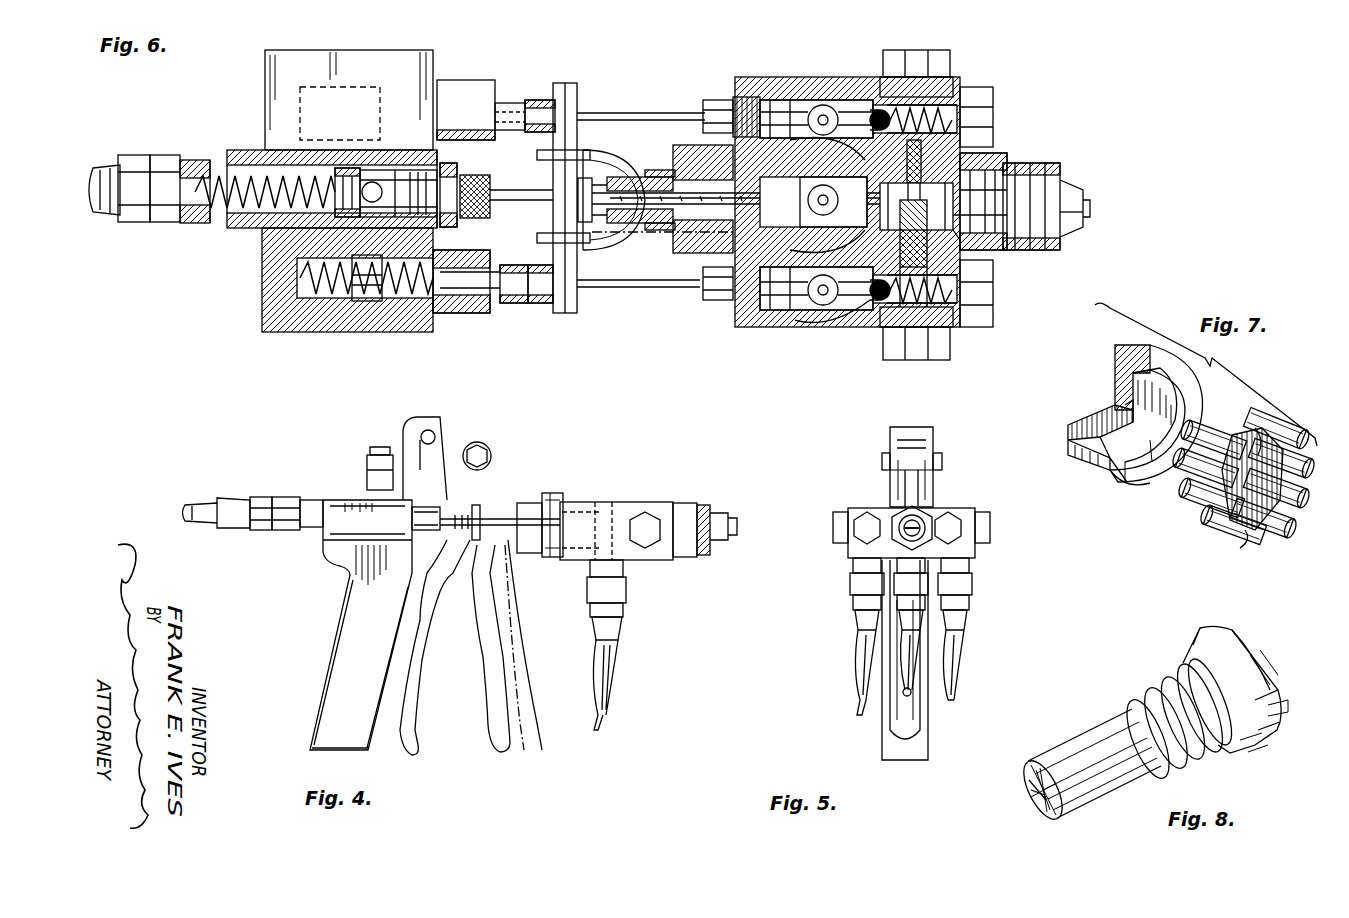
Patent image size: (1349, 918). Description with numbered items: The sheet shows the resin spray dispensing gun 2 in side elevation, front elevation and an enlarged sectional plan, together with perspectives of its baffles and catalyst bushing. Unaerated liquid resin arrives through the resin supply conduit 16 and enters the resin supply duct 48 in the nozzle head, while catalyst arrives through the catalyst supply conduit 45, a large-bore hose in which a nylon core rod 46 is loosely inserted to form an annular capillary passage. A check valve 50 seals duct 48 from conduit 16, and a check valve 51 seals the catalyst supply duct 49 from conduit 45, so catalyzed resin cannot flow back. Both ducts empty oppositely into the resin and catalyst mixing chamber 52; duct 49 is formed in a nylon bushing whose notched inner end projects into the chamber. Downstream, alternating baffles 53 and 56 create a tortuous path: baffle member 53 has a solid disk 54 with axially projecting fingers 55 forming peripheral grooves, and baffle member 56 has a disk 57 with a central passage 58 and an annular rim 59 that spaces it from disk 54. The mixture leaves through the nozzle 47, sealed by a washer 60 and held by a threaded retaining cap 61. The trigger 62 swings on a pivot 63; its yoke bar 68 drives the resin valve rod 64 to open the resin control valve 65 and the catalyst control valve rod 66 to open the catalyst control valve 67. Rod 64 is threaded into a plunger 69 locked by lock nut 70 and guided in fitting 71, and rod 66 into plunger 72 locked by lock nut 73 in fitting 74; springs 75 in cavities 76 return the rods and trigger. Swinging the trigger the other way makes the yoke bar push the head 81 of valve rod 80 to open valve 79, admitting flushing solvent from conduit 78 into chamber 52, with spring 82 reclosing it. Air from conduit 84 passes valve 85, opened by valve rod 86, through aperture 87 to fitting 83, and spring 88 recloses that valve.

In FIG. 6, the gun 2 is at (262, 322).
In FIG. 4, the gun 2 is at (335, 628).
In FIG. 5, the gun 2 is at (882, 742).
In FIG. 6, the resin supply conduit 16 is at (825, 100).
In FIG. 5, the resin supply conduit 16 is at (965, 652).
In FIG. 6, the catalyst supply conduit 45 is at (820, 310).
In FIG. 4, the catalyst supply conduit 45 is at (612, 627).
In FIG. 5, the catalyst supply conduit 45 is at (858, 655).
In FIG. 4, the flexible plastic solid core rod 46 is at (603, 718).
In FIG. 5, the flexible plastic solid core rod 46 is at (858, 705).
In FIG. 6, the nozzle 47 is at (1080, 190).
In FIG. 4, the nozzle 47 is at (735, 515).
In FIG. 5, the nozzle 47 is at (925, 520).
In FIG. 6, the resin supply duct 48 is at (925, 160).
In FIG. 6, the catalyst supply duct 49 is at (955, 290).
In FIG. 8, the catalyst supply duct 49 is at (1072, 806).
In FIG. 6, the check valve 50 is at (890, 75).
In FIG. 6, the check valve 51 is at (872, 302).
In FIG. 6, the resin and catalyst mixing chamber 52 is at (960, 250).
In FIG. 6, the baffle member 53 is at (965, 185).
In FIG. 7, the baffle member 53 is at (1188, 538).
In FIG. 7, the solid disk 54 is at (1250, 435).
In FIG. 7, the fingers 55 is at (1275, 540).
In FIG. 6, the baffle member 56 is at (1000, 180).
In FIG. 7, the baffle member 56 is at (1063, 460).
In FIG. 7, the disk 57 is at (1085, 418).
In FIG. 7, the central passage 58 is at (1125, 405).
In FIG. 7, the annular flange or rim 59 is at (1118, 485).
In FIG. 6, the washer 60 is at (1080, 225).
In FIG. 6, the threaded retaining cap 61 is at (1010, 260).
In FIG. 4, the threaded retaining cap 61 is at (703, 505).
In FIG. 5, the threaded retaining cap 61 is at (885, 515).
In FIG. 6, the trigger 62 is at (610, 168).
In FIG. 4, the trigger 62 is at (500, 665).
In FIG. 5, the trigger 62 is at (915, 730).
In FIG. 4, the pivot 63 is at (490, 450).
In FIG. 5, the pivot 63 is at (945, 460).
In FIG. 6, the resin valve rod 64 is at (640, 112).
In FIG. 6, the resin control valve 65 is at (874, 112).
In FIG. 6, the catalyst control valve rod 66 is at (622, 290).
In FIG. 4, the catalyst control valve rod 66 is at (562, 500).
In FIG. 6, the catalyst control valve 67 is at (855, 300).
In FIG. 6, the yoke bar 68 is at (578, 85).
In FIG. 4, the yoke bar 68 is at (495, 540).
In FIG. 6, the plunger 69 is at (503, 102).
In FIG. 6, the lock nut 70 is at (542, 100).
In FIG. 6, the fitting 71 is at (450, 80).
In FIG. 6, the plunger 72 is at (515, 304).
In FIG. 6, the lock nut 73 is at (542, 304).
In FIG. 6, the fitting 74 is at (460, 314).
In FIG. 4, the fitting 74 is at (445, 497).
In FIG. 6, the springs 75 is at (370, 300).
In FIG. 6, the cavities 76 is at (345, 298).
In FIG. 6, the conduit 78 is at (750, 328).
In FIG. 5, the conduit 78 is at (912, 693).
In FIG. 6, the valve 79 is at (915, 360).
In FIG. 6, the valve rod 80 is at (660, 230).
In FIG. 6, the head 81 is at (590, 235).
In FIG. 4, the head 81 is at (535, 503).
In FIG. 6, the spring 82 is at (650, 176).
In FIG. 4, the fitting 83 is at (372, 465).
In FIG. 6, the conduit 84 is at (100, 215).
In FIG. 4, the conduit 84 is at (200, 508).
In FIG. 6, the valve 85 is at (340, 170).
In FIG. 6, the valve rod 86 is at (548, 192).
In FIG. 6, the aperture 87 is at (372, 183).
In FIG. 6, the spring 88 is at (195, 225).